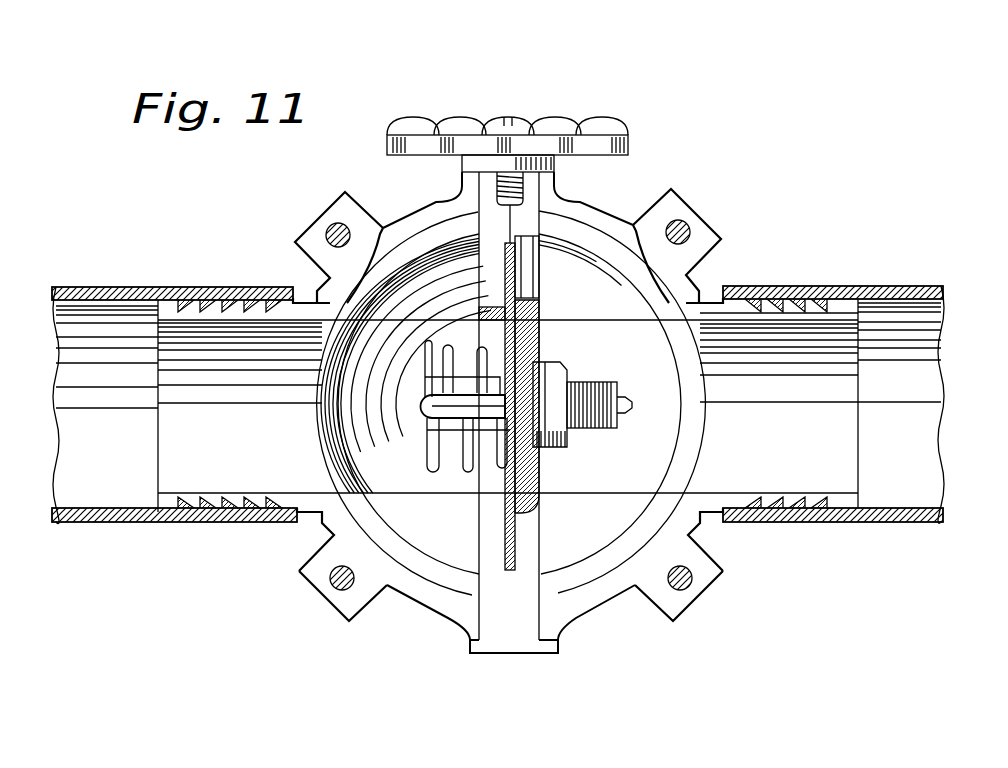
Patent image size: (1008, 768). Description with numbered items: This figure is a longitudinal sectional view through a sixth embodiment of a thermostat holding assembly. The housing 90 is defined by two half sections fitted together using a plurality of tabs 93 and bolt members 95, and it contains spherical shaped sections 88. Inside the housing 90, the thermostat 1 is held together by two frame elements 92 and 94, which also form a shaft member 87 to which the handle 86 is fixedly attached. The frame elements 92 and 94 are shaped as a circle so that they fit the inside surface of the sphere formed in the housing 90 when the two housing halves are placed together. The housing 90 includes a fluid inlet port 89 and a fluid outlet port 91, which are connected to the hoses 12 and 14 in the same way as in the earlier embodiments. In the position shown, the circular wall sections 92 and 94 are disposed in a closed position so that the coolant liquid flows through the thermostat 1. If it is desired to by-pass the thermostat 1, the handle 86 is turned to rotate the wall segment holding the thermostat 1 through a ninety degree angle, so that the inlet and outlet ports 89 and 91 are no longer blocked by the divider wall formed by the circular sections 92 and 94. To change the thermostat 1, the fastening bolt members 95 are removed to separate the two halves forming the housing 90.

The thermostat 1 is at (583, 360).
The hose 12 is at (105, 287).
The hose 14 is at (877, 285).
The handle 86 is at (547, 130).
The shaft member 87 is at (528, 190).
The spherical shaped section 88 is at (618, 302).
The fluid inlet port 89 is at (220, 500).
The housing 90 is at (413, 612).
The fluid outlet port 91 is at (808, 497).
The frame element 92 is at (527, 272).
The tab 93 is at (672, 605).
The frame element 94 is at (488, 263).
The bolt member 95 is at (328, 233).